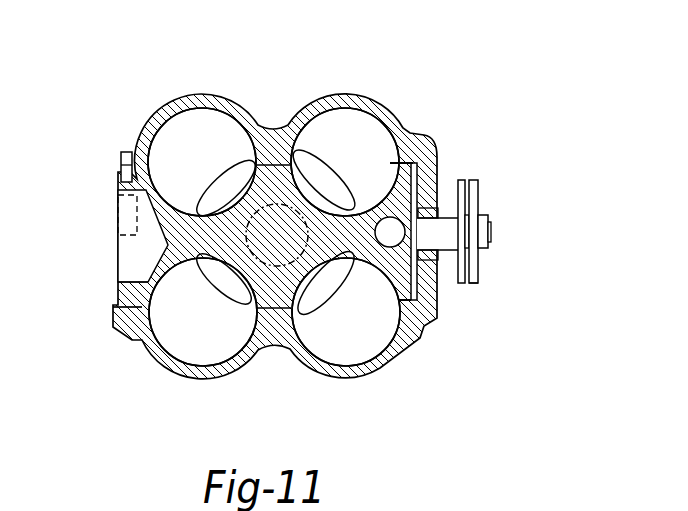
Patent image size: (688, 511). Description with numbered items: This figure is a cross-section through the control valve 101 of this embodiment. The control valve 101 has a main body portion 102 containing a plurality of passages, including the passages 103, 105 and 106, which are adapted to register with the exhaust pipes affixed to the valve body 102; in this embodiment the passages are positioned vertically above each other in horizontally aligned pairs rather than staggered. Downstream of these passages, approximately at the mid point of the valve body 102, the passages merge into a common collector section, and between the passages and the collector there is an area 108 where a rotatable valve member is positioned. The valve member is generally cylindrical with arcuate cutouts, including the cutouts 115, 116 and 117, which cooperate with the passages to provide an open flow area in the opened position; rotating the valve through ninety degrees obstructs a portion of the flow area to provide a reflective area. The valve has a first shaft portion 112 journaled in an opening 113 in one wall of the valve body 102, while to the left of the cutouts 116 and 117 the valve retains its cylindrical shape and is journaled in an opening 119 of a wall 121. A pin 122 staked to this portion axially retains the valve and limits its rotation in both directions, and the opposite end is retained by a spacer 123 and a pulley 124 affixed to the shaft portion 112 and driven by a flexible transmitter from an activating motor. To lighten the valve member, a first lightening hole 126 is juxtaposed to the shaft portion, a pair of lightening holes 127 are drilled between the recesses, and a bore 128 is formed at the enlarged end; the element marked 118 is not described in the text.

The control valve 101 is at (307, 212).
The main body portion 102 is at (357, 94).
The passage 103 is at (365, 145).
The passage 105 is at (222, 350).
The passage 106 is at (217, 139).
The area 108 is at (365, 352).
The first shaft portion 112 is at (490, 234).
The opening 113 is at (452, 212).
The arcuate cutout 115 is at (352, 310).
The arcuate cutout 116 is at (166, 268).
The arcuate cutout 117 is at (182, 212).
The piston 118 is at (380, 206).
The opening 119 is at (112, 320).
The wall 121 is at (127, 151).
The pin 122 is at (121, 160).
The spacer 123 is at (452, 262).
The pulley 124 is at (478, 280).
The first lightening hole 126 is at (430, 170).
The lightening holes 127 is at (310, 287).
The bore 128 is at (138, 278).